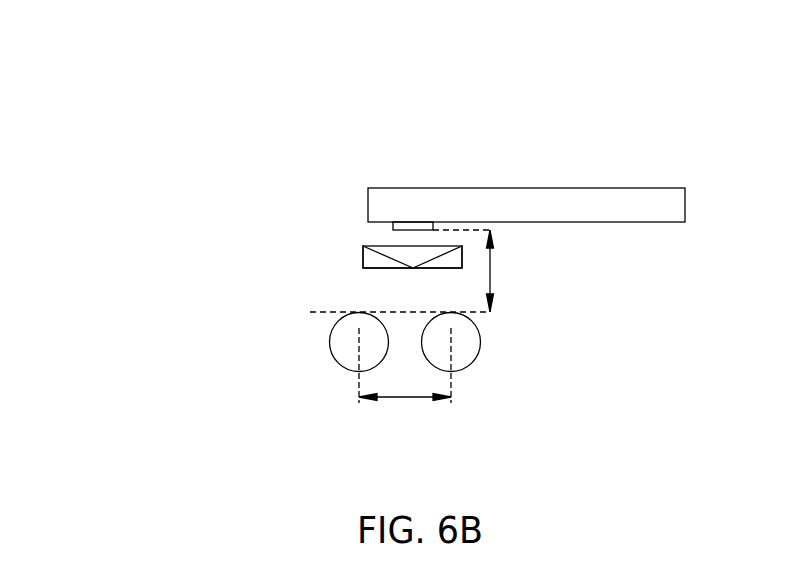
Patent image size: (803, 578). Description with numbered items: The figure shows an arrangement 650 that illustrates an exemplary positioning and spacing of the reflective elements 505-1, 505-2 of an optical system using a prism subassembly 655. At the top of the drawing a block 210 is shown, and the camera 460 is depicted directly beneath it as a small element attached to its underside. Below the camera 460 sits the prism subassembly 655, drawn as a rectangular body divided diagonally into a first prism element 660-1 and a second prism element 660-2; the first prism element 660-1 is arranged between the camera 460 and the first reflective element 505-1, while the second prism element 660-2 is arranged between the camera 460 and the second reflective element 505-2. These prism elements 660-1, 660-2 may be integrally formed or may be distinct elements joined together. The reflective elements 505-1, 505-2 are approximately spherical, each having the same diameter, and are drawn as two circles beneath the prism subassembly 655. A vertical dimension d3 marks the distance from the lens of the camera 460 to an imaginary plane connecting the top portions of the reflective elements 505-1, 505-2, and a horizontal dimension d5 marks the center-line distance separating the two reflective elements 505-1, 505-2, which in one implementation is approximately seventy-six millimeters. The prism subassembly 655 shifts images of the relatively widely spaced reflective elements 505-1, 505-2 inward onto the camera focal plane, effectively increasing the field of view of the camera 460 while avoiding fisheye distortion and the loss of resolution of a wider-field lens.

The arrangement 650 is at (636, 108).
The substrate / platform 210 is at (617, 187).
The camera 460 is at (393, 230).
The prism subassembly 655 is at (249, 266).
The first prism element 660-1 is at (363, 262).
The second prism element 660-2 is at (433, 268).
The first reflective element 505-1 is at (329, 342).
The second reflective element 505-2 is at (481, 340).
The distance d3 is at (492, 270).
The center-line distance d5 is at (400, 398).